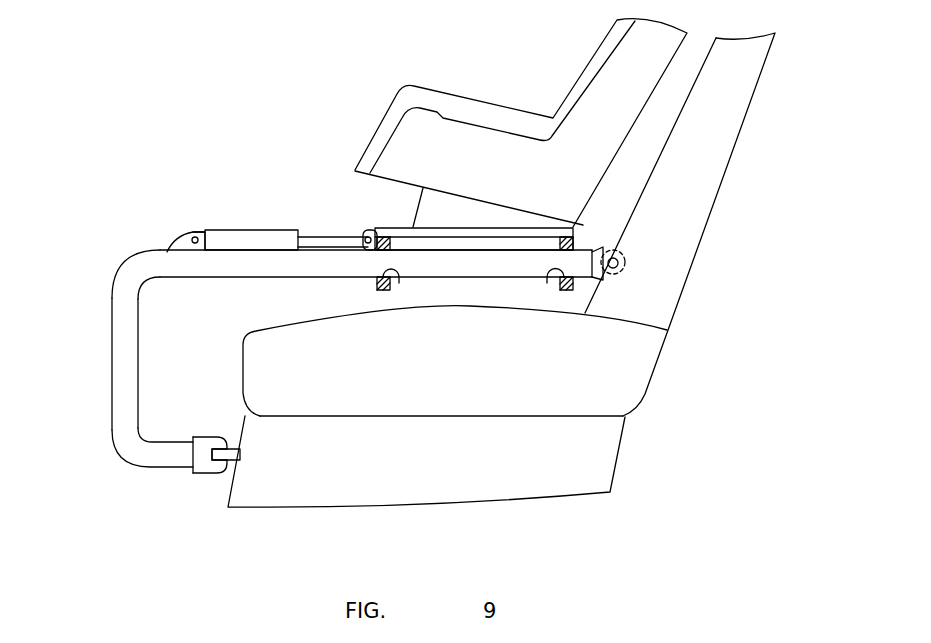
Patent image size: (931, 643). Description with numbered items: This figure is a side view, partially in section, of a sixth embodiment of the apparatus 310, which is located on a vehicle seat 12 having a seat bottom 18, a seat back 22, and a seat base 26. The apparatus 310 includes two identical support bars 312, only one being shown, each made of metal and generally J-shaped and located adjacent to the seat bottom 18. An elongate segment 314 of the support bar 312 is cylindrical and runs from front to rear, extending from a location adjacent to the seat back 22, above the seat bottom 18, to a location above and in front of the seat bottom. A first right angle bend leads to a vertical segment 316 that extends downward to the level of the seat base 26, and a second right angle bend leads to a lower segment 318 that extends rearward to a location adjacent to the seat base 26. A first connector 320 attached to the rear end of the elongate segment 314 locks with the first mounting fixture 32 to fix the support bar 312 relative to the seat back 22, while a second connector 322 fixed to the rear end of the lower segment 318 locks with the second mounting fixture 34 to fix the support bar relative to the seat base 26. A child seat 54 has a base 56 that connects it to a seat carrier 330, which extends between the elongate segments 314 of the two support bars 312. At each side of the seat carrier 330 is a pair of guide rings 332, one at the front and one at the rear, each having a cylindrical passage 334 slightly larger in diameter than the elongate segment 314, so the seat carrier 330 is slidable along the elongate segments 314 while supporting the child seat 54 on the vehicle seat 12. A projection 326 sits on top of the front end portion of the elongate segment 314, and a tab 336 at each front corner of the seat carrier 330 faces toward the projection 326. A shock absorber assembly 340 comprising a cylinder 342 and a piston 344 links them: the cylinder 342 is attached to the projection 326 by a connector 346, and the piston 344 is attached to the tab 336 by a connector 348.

The vehicle seat 12 is at (762, 125).
The seat bottom 18 is at (648, 364).
The seat back 22 is at (718, 166).
The seat base 26 is at (609, 455).
The first mounting fixture 32 is at (620, 262).
The second mounting fixture 34 is at (232, 437).
The child seat 54 is at (556, 82).
The base 56 is at (425, 202).
The apparatus 310 is at (137, 141).
The support bar 312 is at (116, 322).
The elongate segment 314 is at (229, 266).
The vertical segment 316 is at (122, 372).
The lower segment 318 is at (163, 458).
The first connector 320 is at (607, 240).
The second connector 322 is at (217, 442).
The projection 326 is at (188, 232).
The seat carrier 330 is at (340, 188).
The guide rings 332 is at (382, 292).
The cylindrical passage 334 is at (399, 283).
The tab 336 is at (373, 227).
The shock absorber assembly 340 is at (255, 190).
The cylinder 342 is at (226, 232).
The piston 344 is at (310, 229).
The connector 346 is at (195, 244).
The connector 348 is at (367, 245).